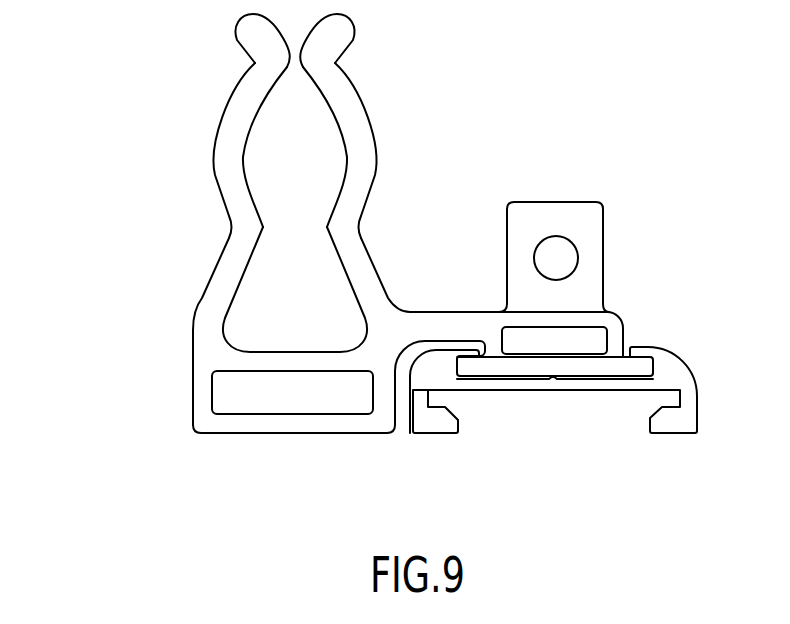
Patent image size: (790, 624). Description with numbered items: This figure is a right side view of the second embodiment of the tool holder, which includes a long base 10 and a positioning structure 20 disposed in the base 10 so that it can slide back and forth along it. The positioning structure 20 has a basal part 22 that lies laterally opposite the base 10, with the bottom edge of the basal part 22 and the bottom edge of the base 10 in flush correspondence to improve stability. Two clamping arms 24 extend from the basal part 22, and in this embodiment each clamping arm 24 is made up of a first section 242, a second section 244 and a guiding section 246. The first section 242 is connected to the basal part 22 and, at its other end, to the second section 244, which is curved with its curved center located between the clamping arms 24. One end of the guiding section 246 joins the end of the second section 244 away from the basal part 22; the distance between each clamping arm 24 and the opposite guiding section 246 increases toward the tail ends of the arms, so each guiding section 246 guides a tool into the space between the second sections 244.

The base 10 is at (663, 319).
The positioning structure 20 is at (469, 145).
The basal part 22 is at (205, 405).
The clamping arms 24 is at (78, 22).
The first section 242 is at (220, 283).
The second section 244 is at (225, 163).
The guiding section 246 is at (255, 43).